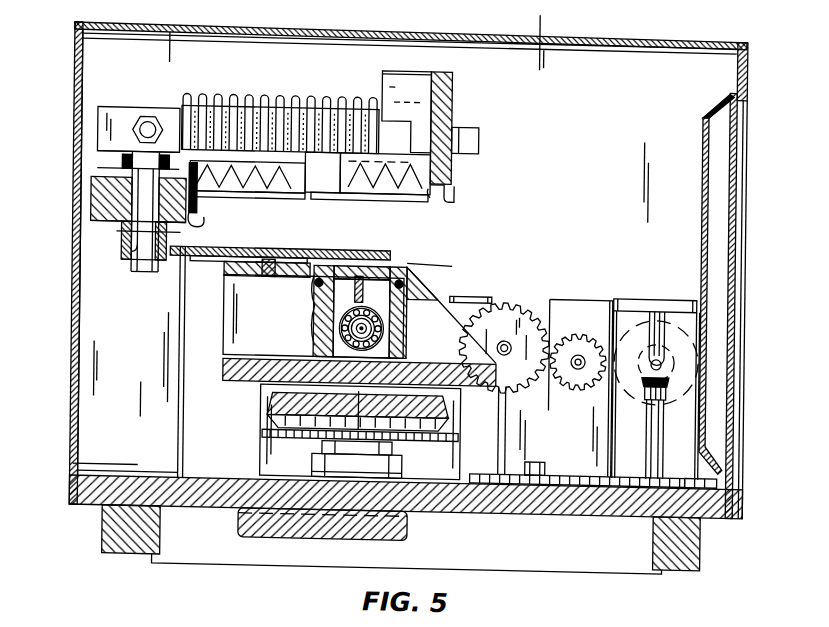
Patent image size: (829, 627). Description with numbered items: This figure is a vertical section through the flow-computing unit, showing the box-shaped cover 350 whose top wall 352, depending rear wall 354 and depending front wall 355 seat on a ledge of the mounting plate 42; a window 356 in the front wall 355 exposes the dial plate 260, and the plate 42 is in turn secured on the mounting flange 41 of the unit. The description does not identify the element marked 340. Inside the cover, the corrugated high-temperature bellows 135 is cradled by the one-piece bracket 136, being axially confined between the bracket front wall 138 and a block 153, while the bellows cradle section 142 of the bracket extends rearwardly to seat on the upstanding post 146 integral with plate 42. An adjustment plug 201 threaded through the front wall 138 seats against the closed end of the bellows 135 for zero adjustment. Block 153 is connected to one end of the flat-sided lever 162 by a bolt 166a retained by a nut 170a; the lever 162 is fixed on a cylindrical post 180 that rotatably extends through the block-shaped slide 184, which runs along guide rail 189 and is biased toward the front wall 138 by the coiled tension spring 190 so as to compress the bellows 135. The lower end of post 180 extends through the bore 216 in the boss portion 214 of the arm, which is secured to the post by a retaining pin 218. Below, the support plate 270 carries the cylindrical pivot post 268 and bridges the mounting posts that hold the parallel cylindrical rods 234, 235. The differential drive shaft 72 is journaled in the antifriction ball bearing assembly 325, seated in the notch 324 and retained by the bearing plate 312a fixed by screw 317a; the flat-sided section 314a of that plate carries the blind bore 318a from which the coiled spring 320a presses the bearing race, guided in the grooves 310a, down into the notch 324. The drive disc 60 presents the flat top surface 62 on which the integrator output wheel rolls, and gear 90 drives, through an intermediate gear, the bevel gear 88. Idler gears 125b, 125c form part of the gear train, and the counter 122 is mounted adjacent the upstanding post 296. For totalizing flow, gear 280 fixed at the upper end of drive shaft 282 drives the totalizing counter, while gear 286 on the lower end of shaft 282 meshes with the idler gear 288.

The housing top wall 340 is at (750, 28).
The box-shaped cover 350 is at (753, 65).
The top wall 352 is at (75, 22).
The rear wall 354 is at (80, 78).
The front wall 355 is at (749, 82).
The window 356 is at (749, 103).
The mounting plate 42 is at (157, 468).
The mounting flange 41 is at (708, 533).
The upstanding post 146 is at (159, 351).
The block 153 is at (118, 105).
The bolt 166a is at (151, 118).
The nut 170a is at (136, 134).
The flat-sided lever 162 is at (127, 159).
The slide 184 is at (102, 220).
The boss portion 214 is at (133, 253).
The bore 216 is at (150, 260).
The high-temperature bellows 135 is at (301, 92).
The bracket 136 is at (458, 71).
The front wall 138 is at (456, 88).
The adjustment plug 201 is at (466, 140).
The bellows cradle section 142 is at (442, 192).
The coiled tension spring 190 is at (284, 168).
The guide rail 189 is at (313, 194).
The post 180 is at (207, 219).
The retaining pin 218 is at (187, 245).
The pivot post 268 is at (268, 254).
The support plate 270 is at (295, 257).
The ball bearing assembly 325 is at (334, 346).
The rod 235 is at (324, 287).
The screw 317a is at (388, 258).
The bearing plate 312a is at (402, 255).
The grooves 310a is at (333, 299).
The blind bore 318a is at (383, 247).
The differential drive shaft 72 is at (388, 320).
The coiled spring 320a is at (413, 261).
The flat-sided section 314a is at (452, 257).
The rod 234 is at (430, 277).
The flat top surface 62 is at (474, 347).
The notch 324 is at (409, 349).
The idler gear 125b is at (516, 310).
The idler gear 125c is at (591, 321).
The drive disc 60 is at (504, 384).
The mounting post 296 is at (612, 388).
The counter 122 is at (703, 315).
The gear 280 is at (677, 366).
The drive shaft 282 is at (671, 427).
The dial plate 260 is at (713, 186).
The idler gear 288 is at (560, 460).
The gear 286 is at (712, 464).
The bevel gear 88 is at (286, 399).
The gear 90 is at (272, 432).